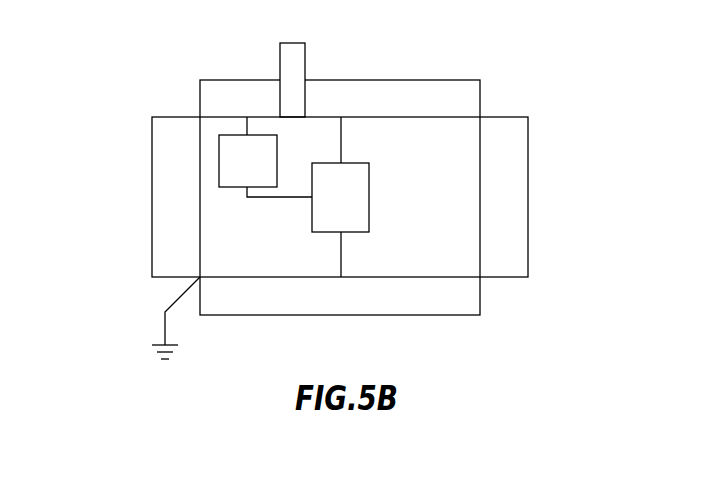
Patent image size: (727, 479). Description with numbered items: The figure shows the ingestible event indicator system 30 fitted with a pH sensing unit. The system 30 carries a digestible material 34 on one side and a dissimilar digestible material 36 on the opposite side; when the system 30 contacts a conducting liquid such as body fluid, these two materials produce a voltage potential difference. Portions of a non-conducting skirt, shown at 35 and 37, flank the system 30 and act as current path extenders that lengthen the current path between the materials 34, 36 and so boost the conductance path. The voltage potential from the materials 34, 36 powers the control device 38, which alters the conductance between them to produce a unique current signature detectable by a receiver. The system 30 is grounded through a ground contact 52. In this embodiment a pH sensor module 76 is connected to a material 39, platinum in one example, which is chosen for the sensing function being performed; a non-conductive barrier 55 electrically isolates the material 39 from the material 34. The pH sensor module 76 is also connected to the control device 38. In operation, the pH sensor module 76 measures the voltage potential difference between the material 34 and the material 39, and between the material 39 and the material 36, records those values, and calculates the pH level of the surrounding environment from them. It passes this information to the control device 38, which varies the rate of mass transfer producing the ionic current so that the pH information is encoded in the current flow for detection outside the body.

The system 30 is at (543, 97).
The digestible material 34 is at (397, 112).
The skirt 35 is at (515, 208).
The digestible material 36 is at (353, 306).
The skirt 37 is at (190, 210).
The control device 38 is at (353, 208).
The material 39 is at (257, 112).
The ground contact 52 is at (163, 320).
The non-conductive barrier 55 is at (305, 60).
The pH sensor module 76 is at (260, 172).